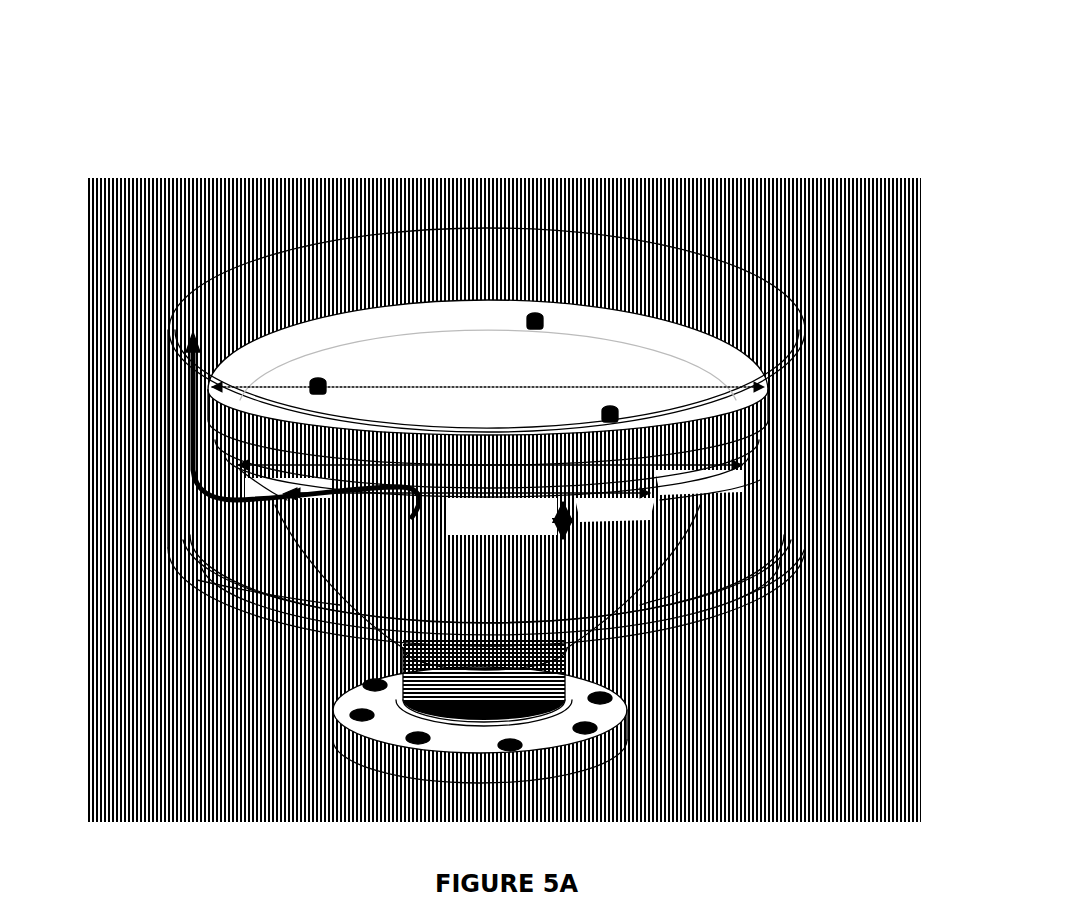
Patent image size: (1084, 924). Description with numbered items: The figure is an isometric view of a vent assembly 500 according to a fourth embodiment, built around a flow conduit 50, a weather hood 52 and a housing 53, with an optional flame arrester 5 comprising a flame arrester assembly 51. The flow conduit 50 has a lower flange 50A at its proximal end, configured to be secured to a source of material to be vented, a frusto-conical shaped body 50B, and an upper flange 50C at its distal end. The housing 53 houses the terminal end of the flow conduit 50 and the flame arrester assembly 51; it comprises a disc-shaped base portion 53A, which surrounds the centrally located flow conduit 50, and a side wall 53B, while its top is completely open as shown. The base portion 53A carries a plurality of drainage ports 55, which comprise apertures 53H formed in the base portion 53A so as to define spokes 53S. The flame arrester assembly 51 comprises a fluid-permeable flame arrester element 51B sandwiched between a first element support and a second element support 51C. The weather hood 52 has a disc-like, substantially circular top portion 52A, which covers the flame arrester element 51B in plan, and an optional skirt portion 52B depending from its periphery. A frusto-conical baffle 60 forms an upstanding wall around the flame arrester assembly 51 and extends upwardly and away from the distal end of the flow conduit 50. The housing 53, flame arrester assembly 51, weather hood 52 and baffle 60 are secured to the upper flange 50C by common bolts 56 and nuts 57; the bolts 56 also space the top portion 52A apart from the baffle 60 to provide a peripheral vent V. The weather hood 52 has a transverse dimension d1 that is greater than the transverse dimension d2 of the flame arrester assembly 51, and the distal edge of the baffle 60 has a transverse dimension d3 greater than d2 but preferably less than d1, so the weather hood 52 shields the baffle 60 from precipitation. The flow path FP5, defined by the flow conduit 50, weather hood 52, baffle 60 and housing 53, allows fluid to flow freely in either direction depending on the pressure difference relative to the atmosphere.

The vent assembly 500 is at (715, 103).
The housing 53 is at (262, 283).
The peripheral vent V is at (740, 600).
The side wall 53B is at (805, 420).
The base portion 53A is at (723, 620).
The spokes 53S is at (785, 587).
The apertures 53H is at (672, 598).
The weather hood 52 is at (690, 352).
The top portion 52A is at (395, 345).
The skirt portion 52B is at (760, 445).
The bolts 56 is at (538, 322).
The nuts 57 is at (522, 318).
The transverse dimension of the weather hood d1 is at (488, 375).
The transverse dimension of the flame arrester assembly d2 is at (470, 515).
The transverse dimension of the baffle distal edge d3 is at (490, 454).
The flame arrester assembly 51 is at (750, 463).
The flame arrester element 51B is at (230, 464).
The second element support 51C is at (783, 560).
The baffle 60 is at (168, 543).
The drainage ports 55 is at (197, 580).
The flow path FP5 is at (192, 335).
The flame arrester 5 is at (522, 542).
The flow conduit 50 is at (403, 665).
The upper flange 50C is at (395, 698).
The frusto-conical shaped body 50B is at (600, 667).
The lower flange 50A is at (345, 740).